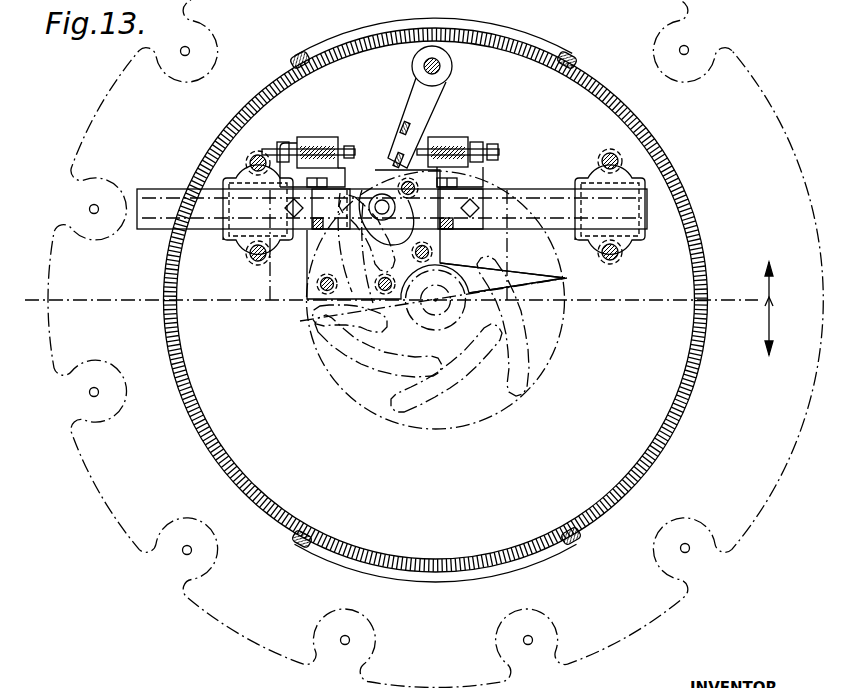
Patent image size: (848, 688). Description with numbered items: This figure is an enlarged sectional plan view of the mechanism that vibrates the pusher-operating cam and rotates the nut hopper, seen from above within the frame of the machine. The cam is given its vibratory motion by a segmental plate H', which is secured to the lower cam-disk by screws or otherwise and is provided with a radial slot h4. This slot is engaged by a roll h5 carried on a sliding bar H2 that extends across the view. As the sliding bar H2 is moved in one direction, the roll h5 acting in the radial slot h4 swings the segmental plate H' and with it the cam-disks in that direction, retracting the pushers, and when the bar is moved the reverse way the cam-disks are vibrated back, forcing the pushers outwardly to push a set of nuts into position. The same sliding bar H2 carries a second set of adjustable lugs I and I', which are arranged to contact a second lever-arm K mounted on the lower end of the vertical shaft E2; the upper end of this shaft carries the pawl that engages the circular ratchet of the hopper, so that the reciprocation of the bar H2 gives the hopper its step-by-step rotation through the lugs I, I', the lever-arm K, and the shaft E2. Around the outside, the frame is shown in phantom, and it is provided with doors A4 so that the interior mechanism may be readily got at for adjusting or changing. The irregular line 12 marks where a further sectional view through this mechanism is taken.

The doors A4 is at (527, 35).
The second lever-arm K is at (418, 95).
The vertical shaft E2 is at (441, 68).
The adjustable lug I is at (308, 145).
The adjustable lug I' is at (458, 143).
The radial slot h4 is at (397, 197).
The sliding bar H2 is at (544, 197).
The roll h5 is at (392, 219).
The segmental plate H' is at (404, 259).
The irregular line 12 is at (786, 308).